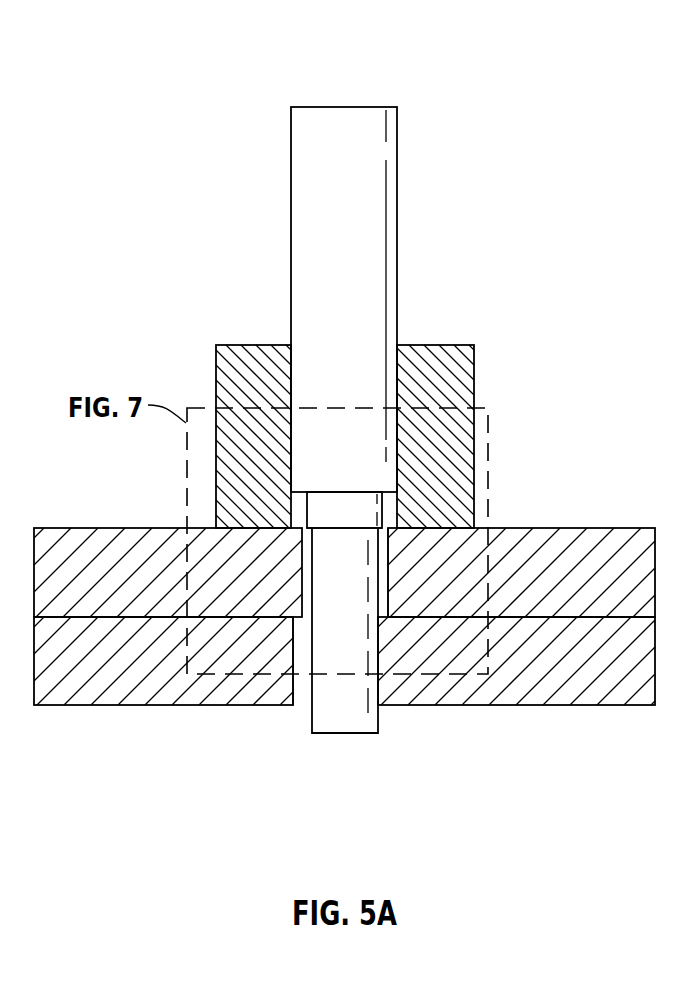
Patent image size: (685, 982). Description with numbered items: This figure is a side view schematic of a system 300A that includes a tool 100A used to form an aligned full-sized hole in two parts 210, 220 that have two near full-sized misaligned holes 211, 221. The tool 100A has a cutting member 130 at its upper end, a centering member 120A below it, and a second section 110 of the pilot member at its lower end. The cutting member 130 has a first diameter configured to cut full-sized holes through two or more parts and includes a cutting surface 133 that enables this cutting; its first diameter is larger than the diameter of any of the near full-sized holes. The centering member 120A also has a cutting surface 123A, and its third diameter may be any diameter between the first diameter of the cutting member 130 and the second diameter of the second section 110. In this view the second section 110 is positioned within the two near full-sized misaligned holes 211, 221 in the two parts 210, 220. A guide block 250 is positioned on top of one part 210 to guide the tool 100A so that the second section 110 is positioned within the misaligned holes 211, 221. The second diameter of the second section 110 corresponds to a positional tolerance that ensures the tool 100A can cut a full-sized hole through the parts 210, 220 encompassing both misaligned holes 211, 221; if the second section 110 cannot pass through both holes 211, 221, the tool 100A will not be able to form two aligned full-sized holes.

The system 300A is at (560, 113).
The tool 100A is at (399, 266).
The cutting member 130 is at (291, 134).
The cutting surface 133 is at (358, 493).
The centering member 120A is at (307, 513).
The cutting surface 123A is at (358, 528).
The second section 110 is at (322, 735).
The guide block 250 is at (432, 352).
The part 210 is at (92, 540).
The near full-sized hole 211 is at (383, 602).
The part 220 is at (92, 688).
The near full-sized hole 221 is at (293, 668).